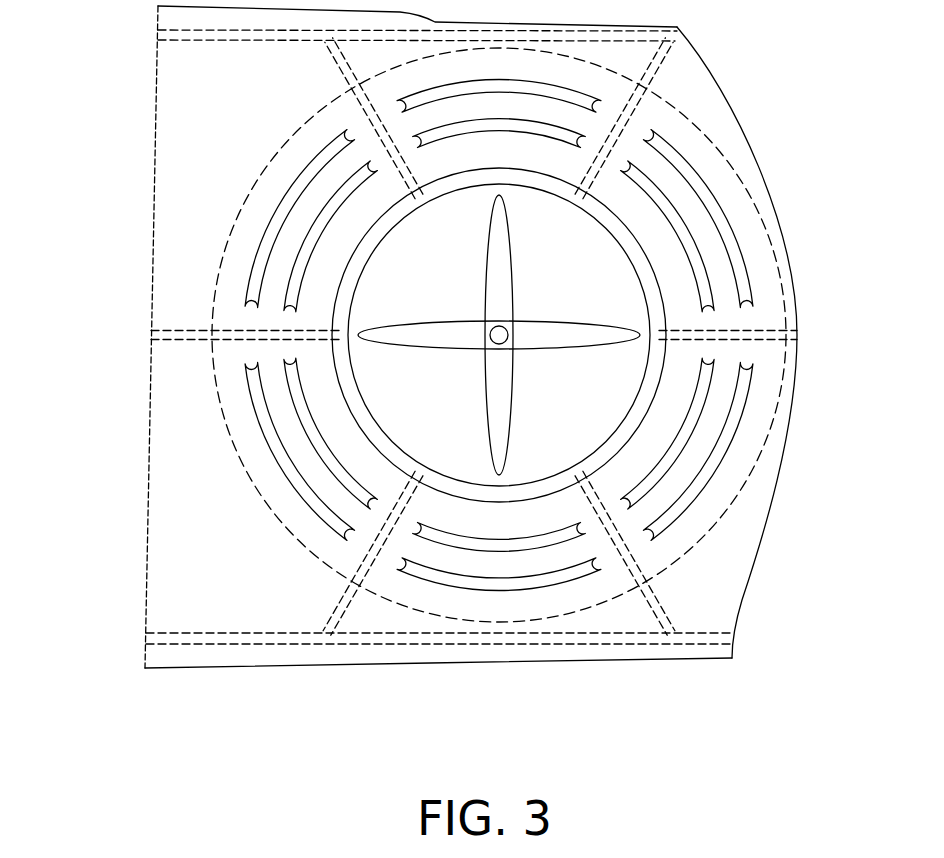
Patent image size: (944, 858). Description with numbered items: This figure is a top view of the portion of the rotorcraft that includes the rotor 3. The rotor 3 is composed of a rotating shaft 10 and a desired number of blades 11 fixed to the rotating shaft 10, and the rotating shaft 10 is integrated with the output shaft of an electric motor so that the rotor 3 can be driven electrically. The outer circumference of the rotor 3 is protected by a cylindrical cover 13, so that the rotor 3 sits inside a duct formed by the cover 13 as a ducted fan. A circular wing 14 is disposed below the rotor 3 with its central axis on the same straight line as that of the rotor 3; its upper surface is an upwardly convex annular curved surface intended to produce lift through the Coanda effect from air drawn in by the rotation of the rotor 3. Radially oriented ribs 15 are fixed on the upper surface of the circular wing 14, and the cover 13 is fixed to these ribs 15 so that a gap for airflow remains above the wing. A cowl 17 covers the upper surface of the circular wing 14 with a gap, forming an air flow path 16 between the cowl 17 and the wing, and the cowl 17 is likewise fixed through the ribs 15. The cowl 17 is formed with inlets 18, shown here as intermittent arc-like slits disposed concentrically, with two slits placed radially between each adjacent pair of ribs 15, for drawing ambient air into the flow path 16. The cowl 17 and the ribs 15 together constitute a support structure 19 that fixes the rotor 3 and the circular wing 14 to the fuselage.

The rotor 3 is at (602, 418).
The rotating shaft 10 is at (509, 362).
The blade 11 is at (594, 340).
The cylindrical cover 13 is at (413, 448).
The circular wing 14 is at (726, 513).
The rib 15 is at (190, 342).
The air flow path 16 is at (729, 478).
The cowl 17 is at (180, 415).
The inlet 18 is at (735, 425).
The support structure 19 is at (90, 350).